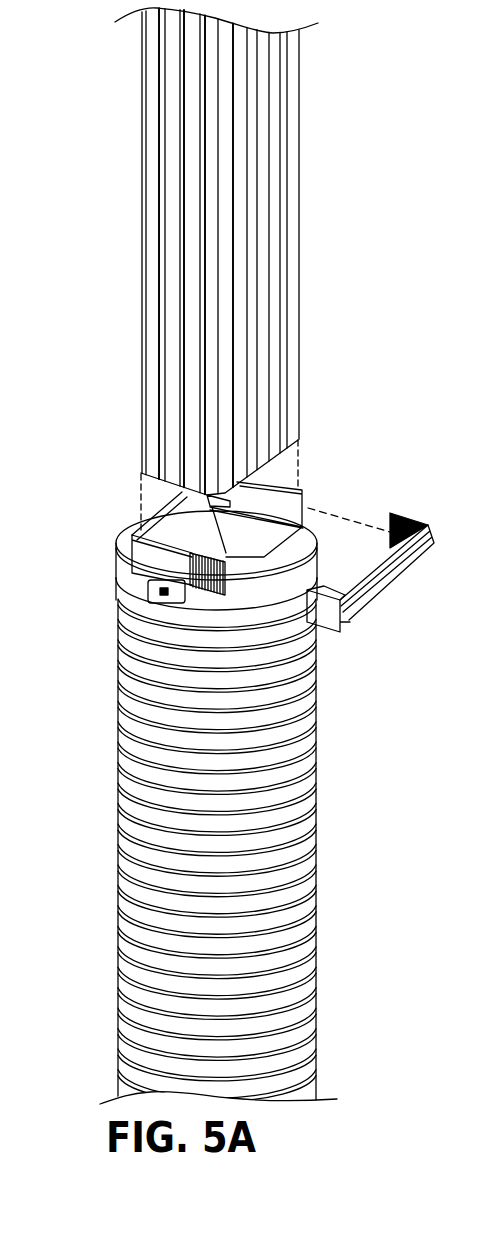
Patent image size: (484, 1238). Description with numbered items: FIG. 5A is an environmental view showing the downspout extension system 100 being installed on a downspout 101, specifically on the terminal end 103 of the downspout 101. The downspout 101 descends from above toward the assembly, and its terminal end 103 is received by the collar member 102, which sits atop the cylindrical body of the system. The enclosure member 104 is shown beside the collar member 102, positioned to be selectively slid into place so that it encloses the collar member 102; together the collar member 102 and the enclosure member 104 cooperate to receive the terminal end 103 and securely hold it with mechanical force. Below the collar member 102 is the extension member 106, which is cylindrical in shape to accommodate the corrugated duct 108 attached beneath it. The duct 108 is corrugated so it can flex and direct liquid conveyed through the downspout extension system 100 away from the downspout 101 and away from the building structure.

The downspout extension system 100 is at (96, 566).
The downspout 101 is at (301, 234).
The collar member 102 is at (278, 500).
The terminal end 103 is at (285, 357).
The enclosure member 104 is at (422, 533).
The extension member 106 is at (128, 598).
The duct 108 is at (314, 703).